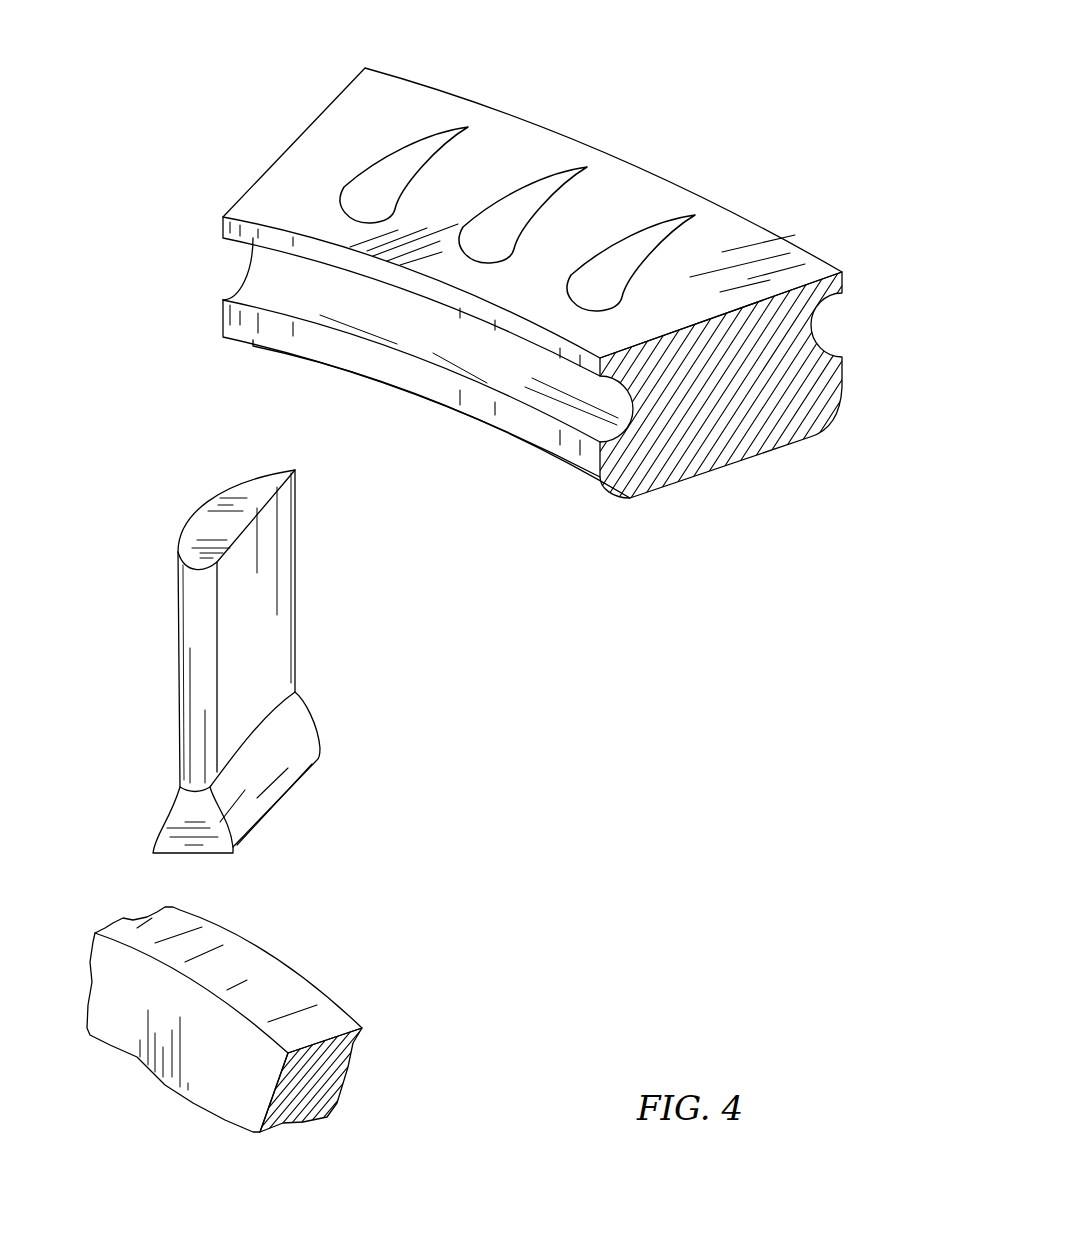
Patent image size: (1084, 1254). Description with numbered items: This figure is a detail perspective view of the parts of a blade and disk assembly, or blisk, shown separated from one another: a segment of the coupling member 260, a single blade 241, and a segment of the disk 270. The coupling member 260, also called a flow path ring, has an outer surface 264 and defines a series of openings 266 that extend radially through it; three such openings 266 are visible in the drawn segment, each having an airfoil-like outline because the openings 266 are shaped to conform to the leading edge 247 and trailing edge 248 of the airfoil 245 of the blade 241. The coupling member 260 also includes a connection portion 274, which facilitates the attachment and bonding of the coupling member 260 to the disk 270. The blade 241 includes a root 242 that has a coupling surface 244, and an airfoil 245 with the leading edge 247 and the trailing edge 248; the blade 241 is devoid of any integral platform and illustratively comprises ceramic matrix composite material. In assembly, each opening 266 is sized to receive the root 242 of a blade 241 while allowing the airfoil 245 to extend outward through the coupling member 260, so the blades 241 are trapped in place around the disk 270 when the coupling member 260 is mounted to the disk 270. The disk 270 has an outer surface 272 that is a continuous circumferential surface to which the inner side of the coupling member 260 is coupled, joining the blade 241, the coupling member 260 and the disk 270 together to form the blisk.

The coupling member 260 is at (582, 270).
The outer surface 264 is at (498, 148).
The openings 266 is at (402, 165).
The connection portion 274 is at (515, 368).
The blade 241 is at (243, 640).
The root 242 is at (168, 814).
The coupling surface 244 is at (298, 756).
The airfoil 245 is at (165, 602).
The leading edge 247 is at (185, 688).
The trailing edge 248 is at (299, 609).
The disk 270 is at (252, 1022).
The outer surface 272 is at (300, 990).